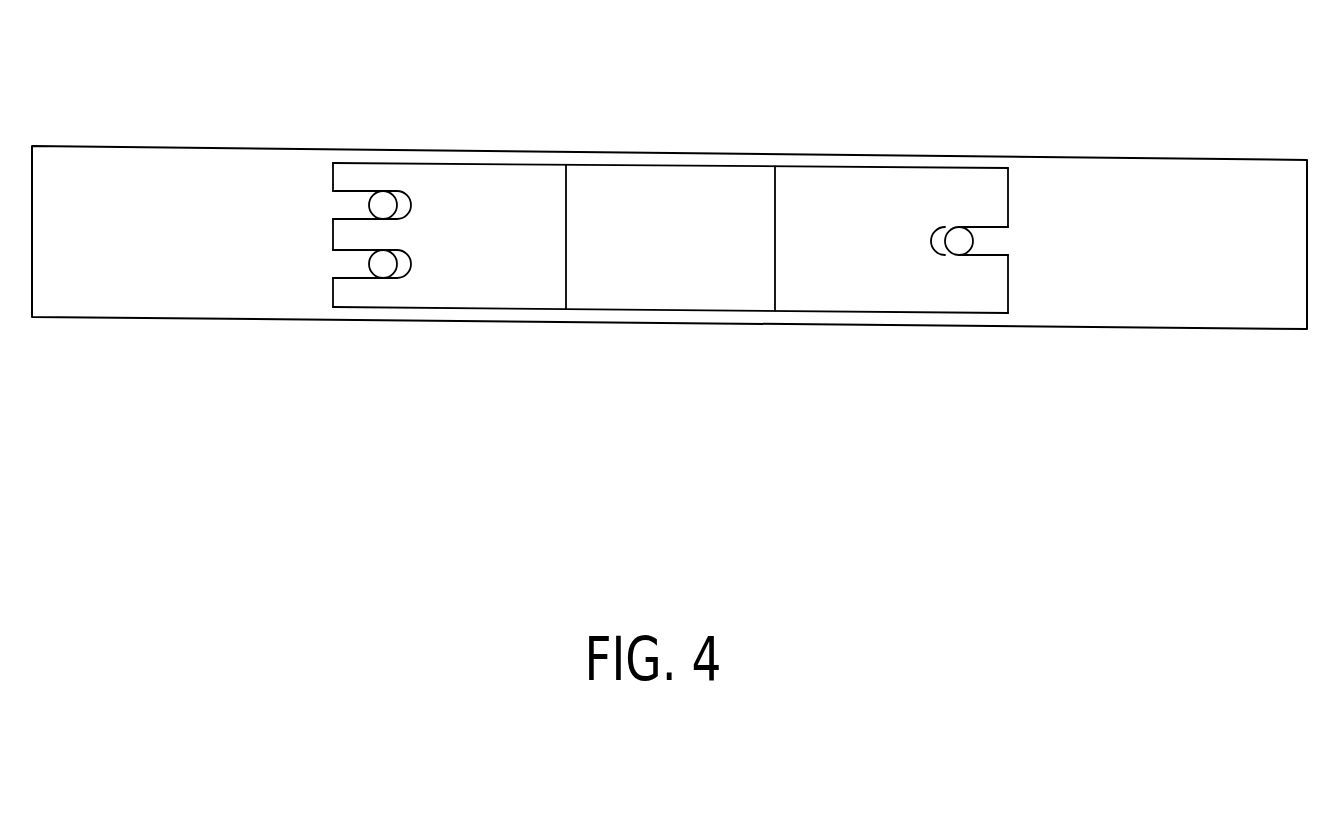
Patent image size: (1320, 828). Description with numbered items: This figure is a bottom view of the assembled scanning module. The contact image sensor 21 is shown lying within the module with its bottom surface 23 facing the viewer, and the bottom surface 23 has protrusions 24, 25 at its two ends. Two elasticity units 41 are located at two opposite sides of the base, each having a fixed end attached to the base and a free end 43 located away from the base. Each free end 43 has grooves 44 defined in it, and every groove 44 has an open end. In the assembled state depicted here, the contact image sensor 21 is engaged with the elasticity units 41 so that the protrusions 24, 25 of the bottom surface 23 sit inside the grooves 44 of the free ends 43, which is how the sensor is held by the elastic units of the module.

The contact image sensor 21 is at (957, 157).
The bottom surface 23 is at (857, 167).
The protrusion 24 is at (952, 243).
The protrusion 25 is at (381, 205).
The elasticity unit 41 is at (500, 237).
The free end 43 is at (372, 296).
The groove 44 is at (392, 191).